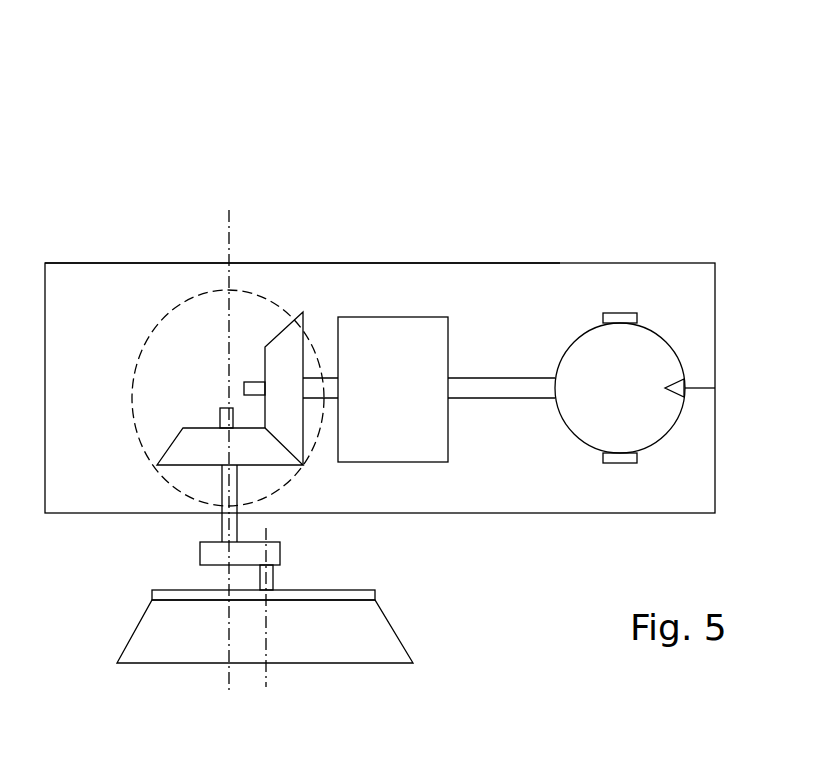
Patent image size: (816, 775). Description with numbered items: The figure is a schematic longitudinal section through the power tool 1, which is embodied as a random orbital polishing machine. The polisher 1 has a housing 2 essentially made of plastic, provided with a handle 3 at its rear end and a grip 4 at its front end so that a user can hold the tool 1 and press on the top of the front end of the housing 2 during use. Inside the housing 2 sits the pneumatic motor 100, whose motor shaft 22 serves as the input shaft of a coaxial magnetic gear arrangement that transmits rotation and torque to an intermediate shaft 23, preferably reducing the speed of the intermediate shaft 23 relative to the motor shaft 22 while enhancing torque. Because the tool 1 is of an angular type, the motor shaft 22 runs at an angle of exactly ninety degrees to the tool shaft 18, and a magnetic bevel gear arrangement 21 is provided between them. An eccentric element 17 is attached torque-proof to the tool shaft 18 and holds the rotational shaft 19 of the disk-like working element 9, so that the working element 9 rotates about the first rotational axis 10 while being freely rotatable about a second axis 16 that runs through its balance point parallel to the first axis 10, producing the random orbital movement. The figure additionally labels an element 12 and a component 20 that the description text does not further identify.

The power tool 1 is at (600, 129).
The housing 2 is at (425, 262).
The handle 3 is at (694, 262).
The grip 4 is at (172, 262).
The working element 9 is at (375, 592).
The rotational axis 10 is at (227, 680).
The base 12 is at (383, 643).
The second axis 16 is at (266, 673).
The eccentric element 17 is at (208, 551).
The tool shaft 18 is at (223, 477).
The rotational shaft 19 is at (275, 573).
The motor 20 is at (382, 333).
The magnetic bevel gear arrangement 21 is at (140, 343).
The motor shaft 22 is at (505, 378).
The intermediate shaft 23 is at (333, 380).
The pneumatic motor 100 is at (621, 362).